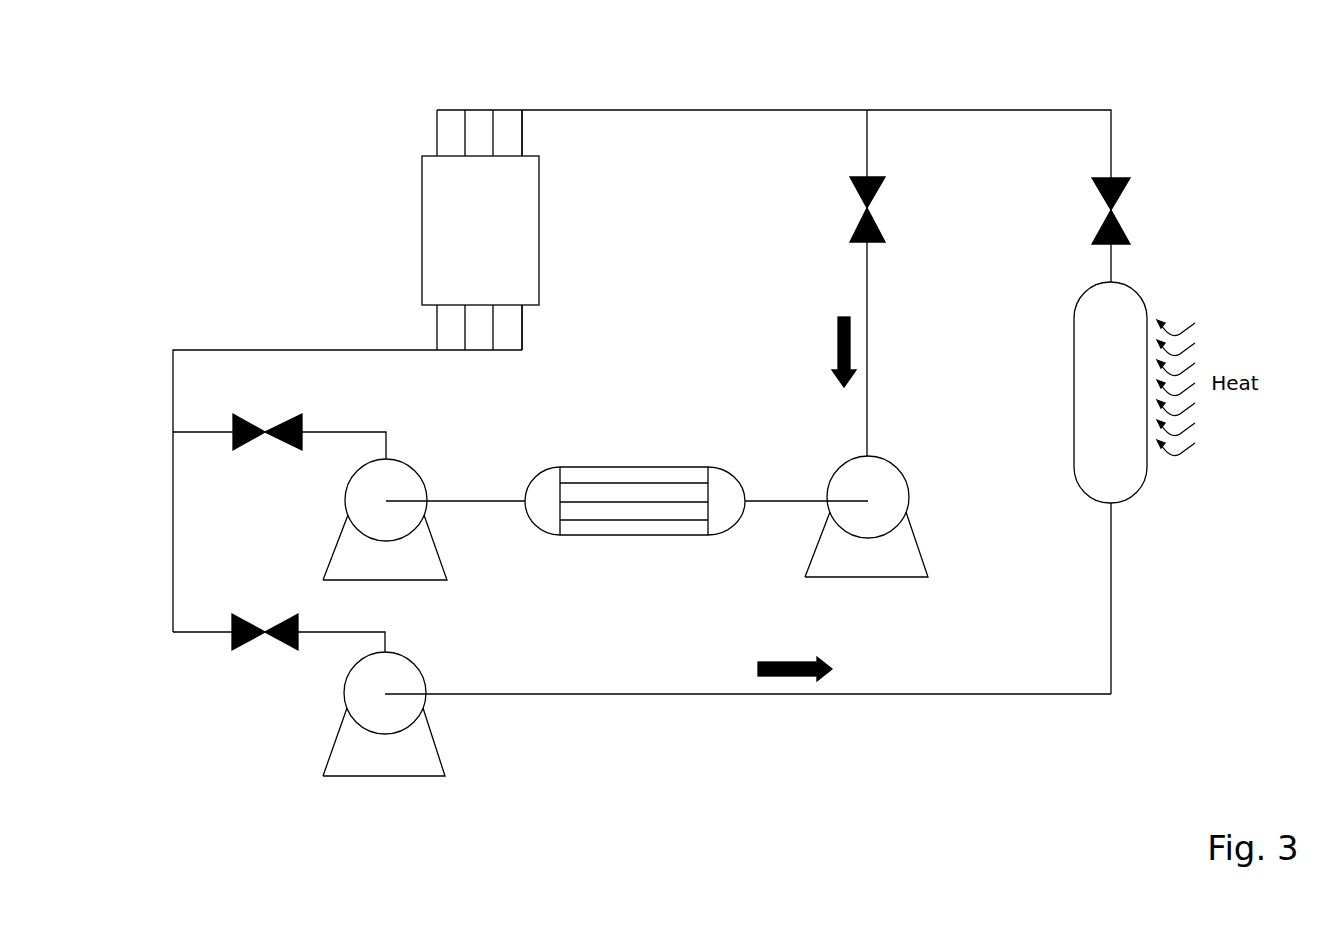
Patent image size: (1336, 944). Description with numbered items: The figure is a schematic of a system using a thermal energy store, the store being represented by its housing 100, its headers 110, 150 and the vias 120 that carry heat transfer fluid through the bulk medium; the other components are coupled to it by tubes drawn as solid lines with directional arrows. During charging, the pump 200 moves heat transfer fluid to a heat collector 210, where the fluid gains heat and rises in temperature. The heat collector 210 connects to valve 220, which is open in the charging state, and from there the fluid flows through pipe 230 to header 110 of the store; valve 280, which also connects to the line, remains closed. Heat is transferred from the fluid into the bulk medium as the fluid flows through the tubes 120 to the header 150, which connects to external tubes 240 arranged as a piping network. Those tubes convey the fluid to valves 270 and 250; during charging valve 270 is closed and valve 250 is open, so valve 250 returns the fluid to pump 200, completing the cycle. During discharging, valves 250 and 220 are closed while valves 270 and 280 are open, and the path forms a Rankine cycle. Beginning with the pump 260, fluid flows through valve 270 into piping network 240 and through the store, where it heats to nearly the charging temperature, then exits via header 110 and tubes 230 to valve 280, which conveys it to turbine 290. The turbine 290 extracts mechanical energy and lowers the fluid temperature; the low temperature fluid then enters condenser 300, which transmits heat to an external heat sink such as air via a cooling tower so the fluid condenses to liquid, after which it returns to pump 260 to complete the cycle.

The housing 100 is at (480, 230).
The header 110 is at (477, 98).
The vias 120 is at (530, 133).
The header 150 is at (477, 368).
The pump 200 is at (717, 714).
The heat collector 210 is at (1110, 488).
The valve 220 is at (1144, 229).
The pipe 230 is at (590, 100).
The external tubes 240 is at (368, 341).
The valve 250 is at (279, 616).
The pump 260 is at (424, 519).
The valve 270 is at (279, 418).
The valve 280 is at (844, 176).
The turbine 290 is at (866, 409).
The condenser 300 is at (696, 519).